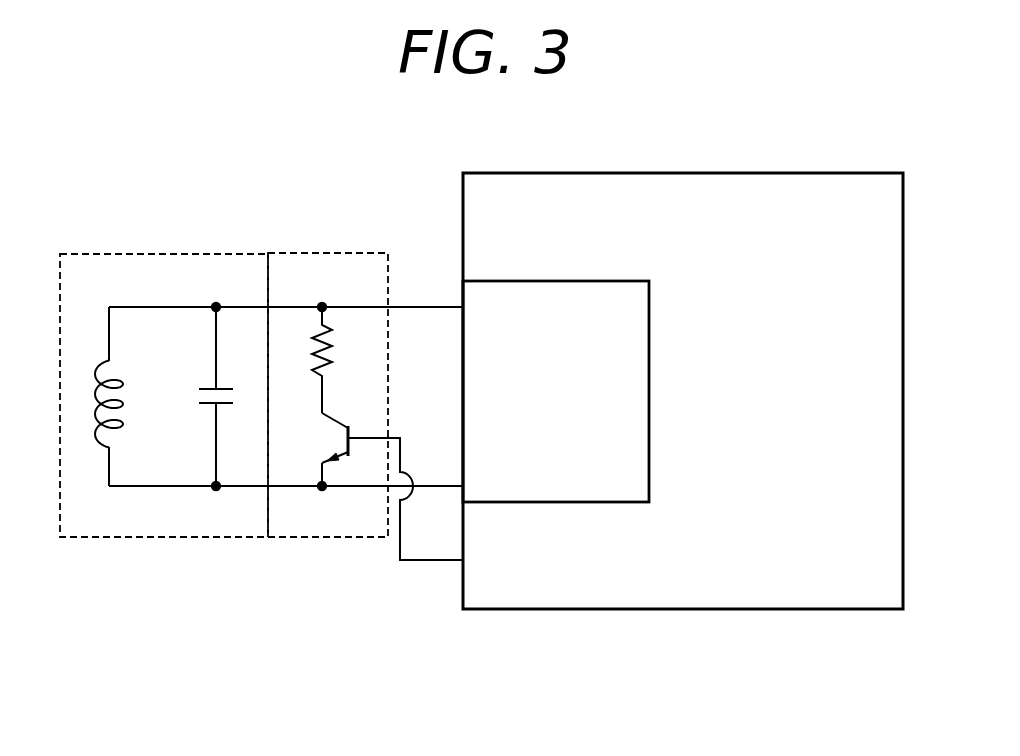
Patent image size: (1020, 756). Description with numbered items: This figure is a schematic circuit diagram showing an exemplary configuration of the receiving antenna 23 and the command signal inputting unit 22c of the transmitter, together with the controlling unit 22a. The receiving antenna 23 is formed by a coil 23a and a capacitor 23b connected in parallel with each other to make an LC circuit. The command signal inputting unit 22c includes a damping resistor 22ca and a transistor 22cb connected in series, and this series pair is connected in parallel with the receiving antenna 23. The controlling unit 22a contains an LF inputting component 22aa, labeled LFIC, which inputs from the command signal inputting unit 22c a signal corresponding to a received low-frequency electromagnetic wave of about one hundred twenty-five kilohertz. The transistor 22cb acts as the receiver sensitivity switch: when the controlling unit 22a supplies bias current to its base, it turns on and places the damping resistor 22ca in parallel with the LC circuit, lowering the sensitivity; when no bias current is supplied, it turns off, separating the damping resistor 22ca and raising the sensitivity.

The receiving antenna 23 is at (135, 538).
The coil 23a is at (117, 430).
The capacitor 23b is at (203, 386).
The command signal inputting unit 22c is at (318, 538).
The damping resistor 22ca is at (316, 338).
The transistor 22cb is at (348, 425).
The controlling unit 22a is at (772, 610).
The LF inputting component 22aa is at (649, 472).